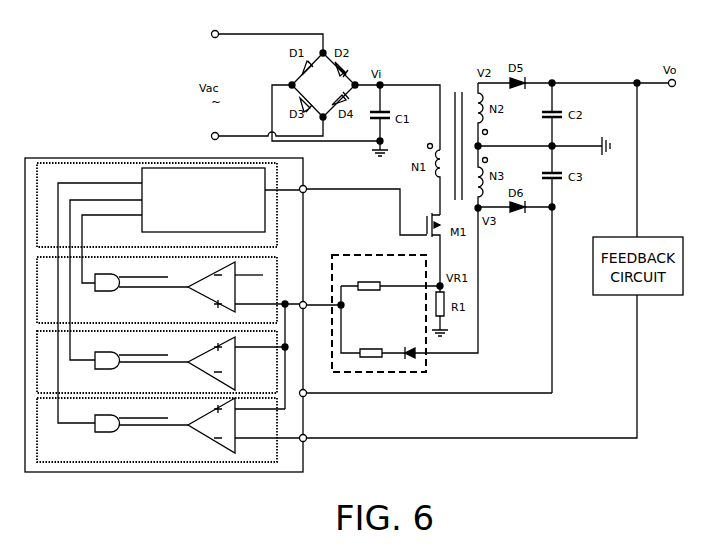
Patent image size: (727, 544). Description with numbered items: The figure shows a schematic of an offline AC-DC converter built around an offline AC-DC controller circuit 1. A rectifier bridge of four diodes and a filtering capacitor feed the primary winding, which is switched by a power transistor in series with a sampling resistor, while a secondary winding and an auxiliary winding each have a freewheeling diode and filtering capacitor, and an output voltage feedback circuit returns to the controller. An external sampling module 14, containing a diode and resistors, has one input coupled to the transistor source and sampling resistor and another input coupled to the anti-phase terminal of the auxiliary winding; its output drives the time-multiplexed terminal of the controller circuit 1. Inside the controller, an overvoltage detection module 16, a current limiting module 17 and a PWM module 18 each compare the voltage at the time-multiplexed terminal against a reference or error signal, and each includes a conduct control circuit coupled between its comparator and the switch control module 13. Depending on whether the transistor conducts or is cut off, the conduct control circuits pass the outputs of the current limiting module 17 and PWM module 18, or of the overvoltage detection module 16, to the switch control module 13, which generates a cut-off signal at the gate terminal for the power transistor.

The offline AC-DC controller circuit 1 is at (182, 315).
The switch control module 13 is at (168, 293).
The external sampling module 14 is at (386, 313).
The overvoltage detection module 16 is at (168, 333).
The current limiting module 17 is at (162, 362).
The PWM module 18 is at (168, 430).